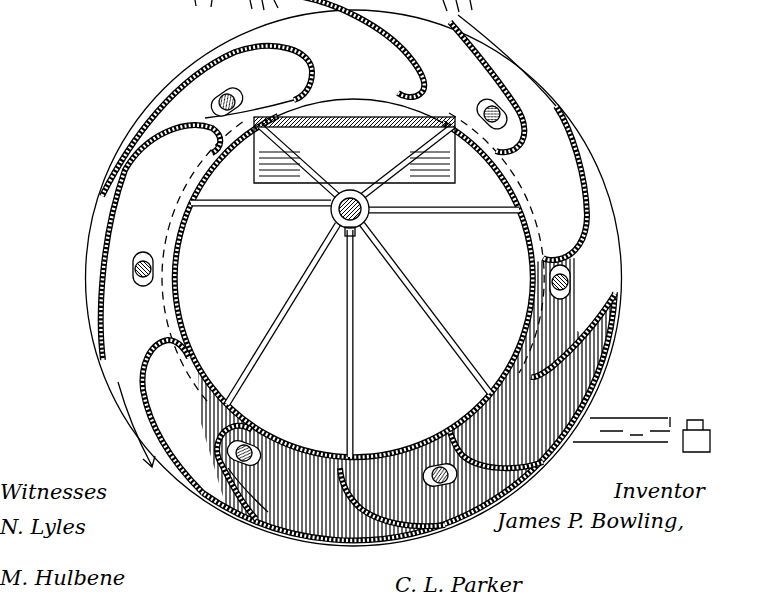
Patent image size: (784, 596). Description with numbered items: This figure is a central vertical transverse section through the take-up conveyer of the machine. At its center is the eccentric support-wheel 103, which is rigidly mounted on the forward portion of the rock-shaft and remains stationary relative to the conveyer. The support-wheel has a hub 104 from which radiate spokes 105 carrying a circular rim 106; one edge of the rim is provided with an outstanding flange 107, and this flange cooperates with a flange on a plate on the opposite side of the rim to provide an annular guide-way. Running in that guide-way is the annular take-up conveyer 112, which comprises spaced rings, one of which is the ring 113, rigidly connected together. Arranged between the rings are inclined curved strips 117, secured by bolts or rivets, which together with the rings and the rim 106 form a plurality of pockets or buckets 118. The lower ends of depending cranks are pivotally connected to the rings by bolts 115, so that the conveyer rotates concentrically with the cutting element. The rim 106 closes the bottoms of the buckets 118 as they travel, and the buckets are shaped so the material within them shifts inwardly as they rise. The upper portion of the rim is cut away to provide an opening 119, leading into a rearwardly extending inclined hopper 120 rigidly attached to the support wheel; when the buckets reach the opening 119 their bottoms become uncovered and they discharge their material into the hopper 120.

The eccentric support-wheel 103 is at (517, 261).
The hub 104 is at (337, 219).
The spokes 105 is at (305, 280).
The circular rim 106 is at (528, 302).
The outstanding flange 107 is at (522, 230).
The annular take-up conveyer 112 is at (635, 262).
The ring 113 is at (590, 295).
The bolts 115 is at (133, 265).
The inclined curved strips 117 is at (633, 352).
The pockets or buckets 118 is at (646, 318).
The opening 119 is at (434, 107).
The inclined hopper 120 is at (354, 150).